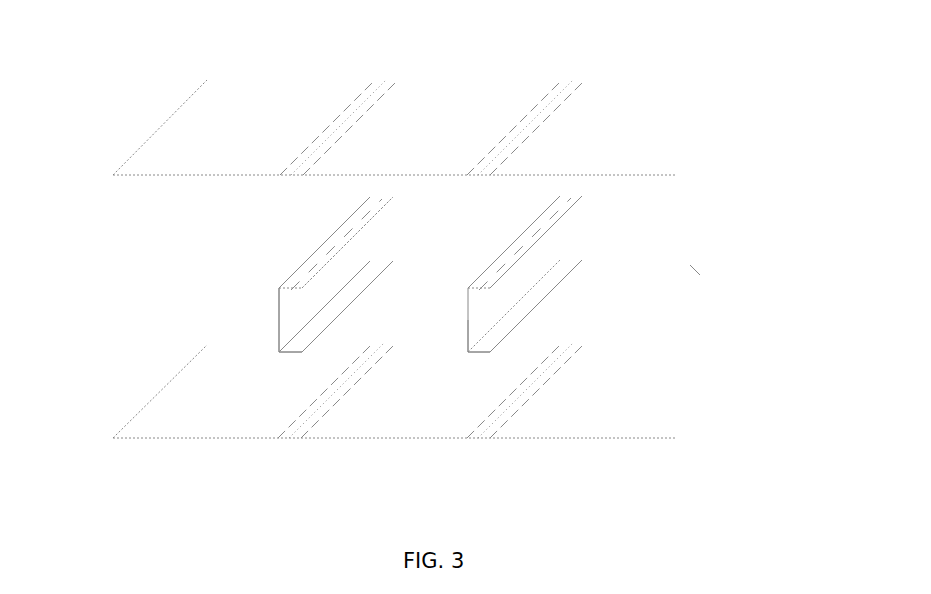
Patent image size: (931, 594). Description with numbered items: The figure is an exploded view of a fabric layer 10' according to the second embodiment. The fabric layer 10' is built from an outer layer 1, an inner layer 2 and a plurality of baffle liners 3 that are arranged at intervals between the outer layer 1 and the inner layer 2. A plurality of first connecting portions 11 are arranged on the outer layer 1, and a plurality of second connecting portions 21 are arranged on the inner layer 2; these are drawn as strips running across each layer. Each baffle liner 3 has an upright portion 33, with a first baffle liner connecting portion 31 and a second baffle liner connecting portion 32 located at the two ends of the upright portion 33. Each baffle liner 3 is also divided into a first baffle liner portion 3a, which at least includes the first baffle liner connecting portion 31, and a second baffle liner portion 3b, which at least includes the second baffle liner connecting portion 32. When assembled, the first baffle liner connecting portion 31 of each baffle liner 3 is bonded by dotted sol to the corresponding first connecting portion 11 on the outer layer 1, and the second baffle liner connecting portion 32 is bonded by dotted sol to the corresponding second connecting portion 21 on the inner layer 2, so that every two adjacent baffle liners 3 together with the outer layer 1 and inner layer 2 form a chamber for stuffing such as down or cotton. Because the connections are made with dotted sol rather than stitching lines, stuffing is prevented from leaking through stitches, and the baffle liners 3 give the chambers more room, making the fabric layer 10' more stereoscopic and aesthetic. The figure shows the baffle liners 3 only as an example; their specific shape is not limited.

The outer layer 1 is at (160, 127).
The first connecting portion 11 is at (358, 97).
The inner layer 2 is at (158, 390).
The second connecting portion 21 is at (315, 420).
The baffle liner 3 is at (268, 264).
The first baffle liner connecting portion 31 is at (337, 243).
The second baffle liner connecting portion 32 is at (340, 300).
The upright portion 33 is at (278, 332).
The first baffle liner portion 3a is at (461, 293).
The second baffle liner portion 3b is at (461, 348).
The fabric layer 10' is at (757, 218).